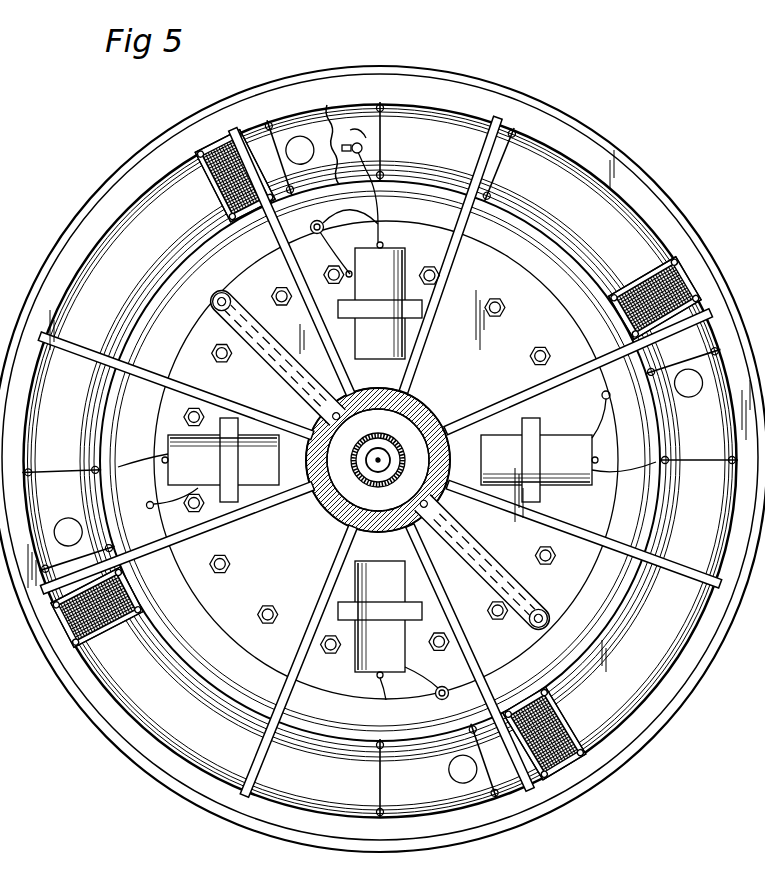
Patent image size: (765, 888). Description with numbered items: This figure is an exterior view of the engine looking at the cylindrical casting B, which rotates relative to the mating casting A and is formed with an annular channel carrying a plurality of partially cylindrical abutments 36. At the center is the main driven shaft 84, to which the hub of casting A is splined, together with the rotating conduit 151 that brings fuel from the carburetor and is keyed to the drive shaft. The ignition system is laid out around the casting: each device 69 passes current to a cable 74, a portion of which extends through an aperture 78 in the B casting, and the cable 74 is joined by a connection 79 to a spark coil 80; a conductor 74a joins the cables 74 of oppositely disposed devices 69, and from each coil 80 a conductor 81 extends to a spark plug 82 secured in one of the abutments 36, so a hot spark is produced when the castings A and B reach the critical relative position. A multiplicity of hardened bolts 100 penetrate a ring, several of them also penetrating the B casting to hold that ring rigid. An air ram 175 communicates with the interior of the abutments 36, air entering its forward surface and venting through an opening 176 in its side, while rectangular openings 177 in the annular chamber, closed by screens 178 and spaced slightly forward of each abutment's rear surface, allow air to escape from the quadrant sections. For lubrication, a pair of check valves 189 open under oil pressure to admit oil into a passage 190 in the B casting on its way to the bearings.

The casting A is at (382, 459).
The casting B is at (380, 457).
The abutments 36 is at (347, 133).
The device 69 is at (389, 450).
The cable 74 is at (386, 471).
The conductor 74a is at (379, 456).
The aperture 78 is at (327, 217).
The connection 79 is at (465, 332).
The spark coil 80 is at (380, 454).
The conductor 81 is at (387, 426).
The spark plug 82 is at (373, 135).
The main driven shaft 84 is at (416, 460).
The hardened bolts 100 is at (370, 459).
The rotating conduit 151 is at (376, 478).
The air ram 175 is at (380, 460).
The opening 176 is at (377, 459).
The rectangular openings 177 is at (376, 455).
The screens 178 is at (376, 455).
The check valves 189 is at (391, 449).
The passage 190 is at (380, 460).